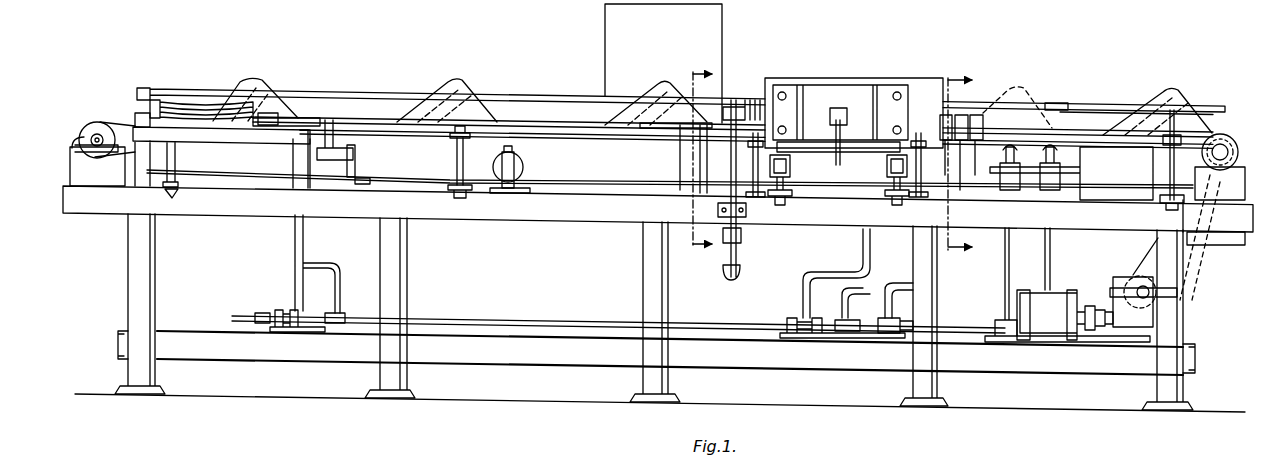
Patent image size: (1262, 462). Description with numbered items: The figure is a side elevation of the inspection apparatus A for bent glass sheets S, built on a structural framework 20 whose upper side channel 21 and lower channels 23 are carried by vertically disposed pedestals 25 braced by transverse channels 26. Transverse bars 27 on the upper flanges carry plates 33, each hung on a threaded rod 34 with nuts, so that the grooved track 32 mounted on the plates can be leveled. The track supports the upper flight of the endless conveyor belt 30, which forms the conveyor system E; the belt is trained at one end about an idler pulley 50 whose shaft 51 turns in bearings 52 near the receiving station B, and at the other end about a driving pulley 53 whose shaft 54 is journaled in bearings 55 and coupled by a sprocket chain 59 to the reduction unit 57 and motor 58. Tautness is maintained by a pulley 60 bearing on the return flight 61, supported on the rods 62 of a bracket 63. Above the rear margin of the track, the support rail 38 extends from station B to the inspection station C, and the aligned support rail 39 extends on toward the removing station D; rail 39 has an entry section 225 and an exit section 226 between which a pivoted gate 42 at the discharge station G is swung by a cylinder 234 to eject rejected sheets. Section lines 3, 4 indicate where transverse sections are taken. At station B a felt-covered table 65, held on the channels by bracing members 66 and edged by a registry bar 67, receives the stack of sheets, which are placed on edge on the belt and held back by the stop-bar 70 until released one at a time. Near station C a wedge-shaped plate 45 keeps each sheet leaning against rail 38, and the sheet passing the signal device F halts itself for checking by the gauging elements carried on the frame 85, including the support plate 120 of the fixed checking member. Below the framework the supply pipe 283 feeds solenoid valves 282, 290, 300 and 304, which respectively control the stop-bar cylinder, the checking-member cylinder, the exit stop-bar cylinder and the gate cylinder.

The structural framework 20 is at (124, 249).
The upper side channel 21 is at (222, 204).
The lower channels 23 is at (192, 343).
The pedestals 25 is at (140, 288).
The transverse channels 26 is at (118, 346).
The transverse bars 27 is at (455, 193).
The endless conveyor belt 30 is at (118, 115).
The grooved track 32 is at (383, 129).
The plates 33 is at (452, 136).
The threaded rod 34 is at (457, 161).
The support rail 38 is at (567, 98).
The support rail 39 is at (1090, 101).
The gate 42 is at (1047, 103).
The wedge-shaped plate 45 is at (675, 125).
The idler pulley 50 is at (97, 128).
The shaft 51 is at (90, 134).
The bearings 52 is at (80, 143).
The pulley 53 is at (1222, 141).
The shaft 54 is at (1226, 148).
The bearings 55 is at (1230, 171).
The reduction unit 57 is at (1128, 281).
The motor 58 is at (1053, 312).
The sprocket chain 59 is at (1152, 256).
The pulley 60 is at (506, 161).
The return flight 61 is at (575, 182).
The rods 62 is at (519, 165).
The bracket 63 is at (513, 193).
The felt-covered table 65 is at (240, 134).
The bracing members 66 is at (298, 163).
The registry bar 67 is at (266, 125).
The stop-bar 70 is at (290, 117).
The frame 85 is at (795, 169).
The support plate 120 is at (810, 107).
The entry section 225 is at (927, 110).
The exit section 226 is at (1107, 110).
The cylinder 234 is at (1060, 169).
The solenoid valve 282 is at (293, 315).
The pipe 283 is at (508, 322).
The solenoid valve 290 is at (797, 316).
The solenoid valve 300 is at (889, 281).
The solenoid valve 304 is at (1000, 321).
The section line 3 is at (706, 66).
The section line 4 is at (956, 69).
The inspection apparatus A is at (358, 80).
The receiving station B is at (218, 84).
The inspection station C is at (852, 70).
The removing station D is at (1214, 100).
The conveyor system E is at (529, 118).
The signal device F is at (735, 96).
The discharge station G is at (1016, 84).
The bent glass sheets S is at (250, 100).